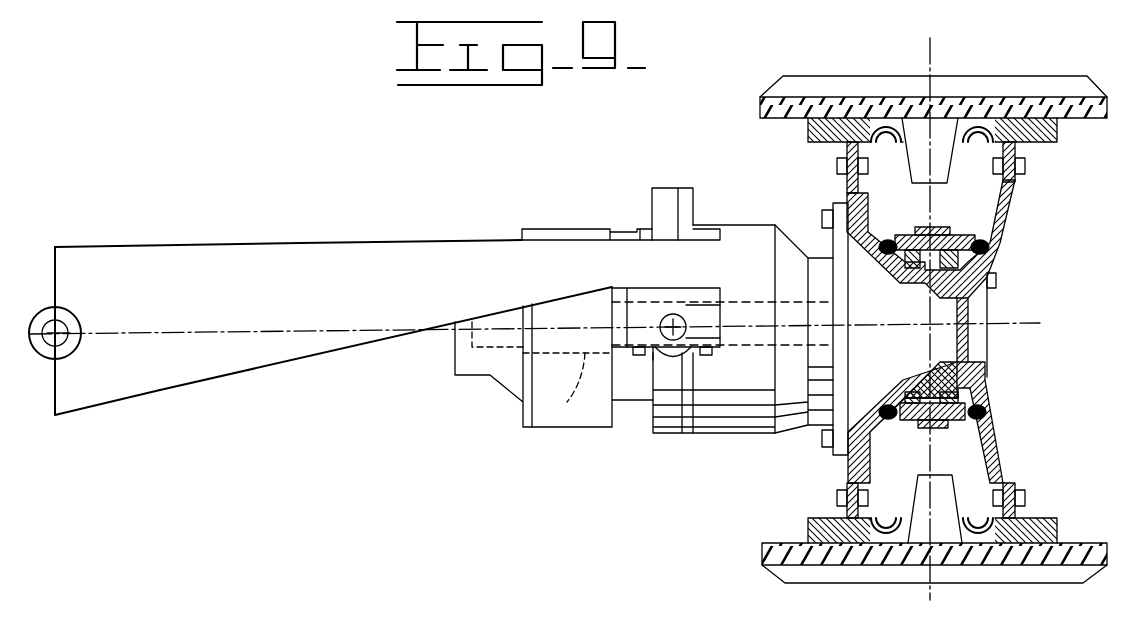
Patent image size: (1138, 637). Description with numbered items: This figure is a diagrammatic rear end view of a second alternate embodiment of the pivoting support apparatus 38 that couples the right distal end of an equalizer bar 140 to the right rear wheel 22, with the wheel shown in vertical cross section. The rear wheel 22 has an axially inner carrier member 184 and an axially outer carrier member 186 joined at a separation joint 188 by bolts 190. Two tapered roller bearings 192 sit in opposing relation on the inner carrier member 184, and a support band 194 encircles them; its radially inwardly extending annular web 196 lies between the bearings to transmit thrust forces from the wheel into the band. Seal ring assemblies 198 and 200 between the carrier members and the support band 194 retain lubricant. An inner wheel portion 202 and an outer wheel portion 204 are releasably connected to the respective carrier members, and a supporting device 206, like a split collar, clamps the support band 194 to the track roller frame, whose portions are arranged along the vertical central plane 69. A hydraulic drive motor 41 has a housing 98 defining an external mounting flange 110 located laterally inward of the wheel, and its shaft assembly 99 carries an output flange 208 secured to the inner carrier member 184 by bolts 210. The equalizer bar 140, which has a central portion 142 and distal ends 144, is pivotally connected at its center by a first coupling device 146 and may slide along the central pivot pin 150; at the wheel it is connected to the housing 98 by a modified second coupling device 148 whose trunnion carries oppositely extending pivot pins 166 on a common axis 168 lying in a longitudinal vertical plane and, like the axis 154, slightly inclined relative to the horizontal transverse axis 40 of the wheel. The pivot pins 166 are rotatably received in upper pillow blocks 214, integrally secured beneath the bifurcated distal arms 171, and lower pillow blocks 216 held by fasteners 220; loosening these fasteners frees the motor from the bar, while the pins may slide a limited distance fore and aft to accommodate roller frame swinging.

The rear wheel 22 is at (849, 464).
The pivoting support apparatus 38 is at (357, 402).
The horizontal transverse axis 40 is at (284, 332).
The hydraulic drive motor 41 is at (577, 430).
The vertical central plane 69 is at (918, 58).
The housing 98 is at (731, 428).
The shaft assembly 99 is at (580, 390).
The mounting flange 110 is at (688, 188).
The equalizer bar 140 is at (326, 375).
The central portion 142 is at (148, 254).
The distal ends 144 is at (442, 250).
The first coupling device 146 is at (66, 364).
The second coupling device 148 is at (658, 318).
The central pivot pin 150 is at (72, 342).
The axis 154 is at (66, 328).
The pivot pins 166 is at (684, 316).
The common axis 168 is at (708, 355).
The distal arms 171 is at (665, 250).
The inner carrier member 184 is at (848, 190).
The outer carrier member 186 is at (1007, 190).
The separation joint 188 is at (980, 298).
The bolts 190 is at (996, 280).
The tapered roller bearings 192 is at (936, 372).
The support band 194 is at (994, 433).
The annular web 196 is at (948, 428).
The seal ring assembly 198 is at (904, 236).
The seal ring assembly 200 is at (1000, 238).
The inner wheel portion 202 is at (809, 532).
The outer wheel portion 204 is at (1060, 538).
The supporting device 206 is at (927, 430).
The output flange 208 is at (838, 418).
The bolts 210 is at (822, 217).
The upper pillow blocks 214 is at (710, 308).
The lower pillow blocks 216 is at (710, 333).
The fasteners 220 is at (656, 368).